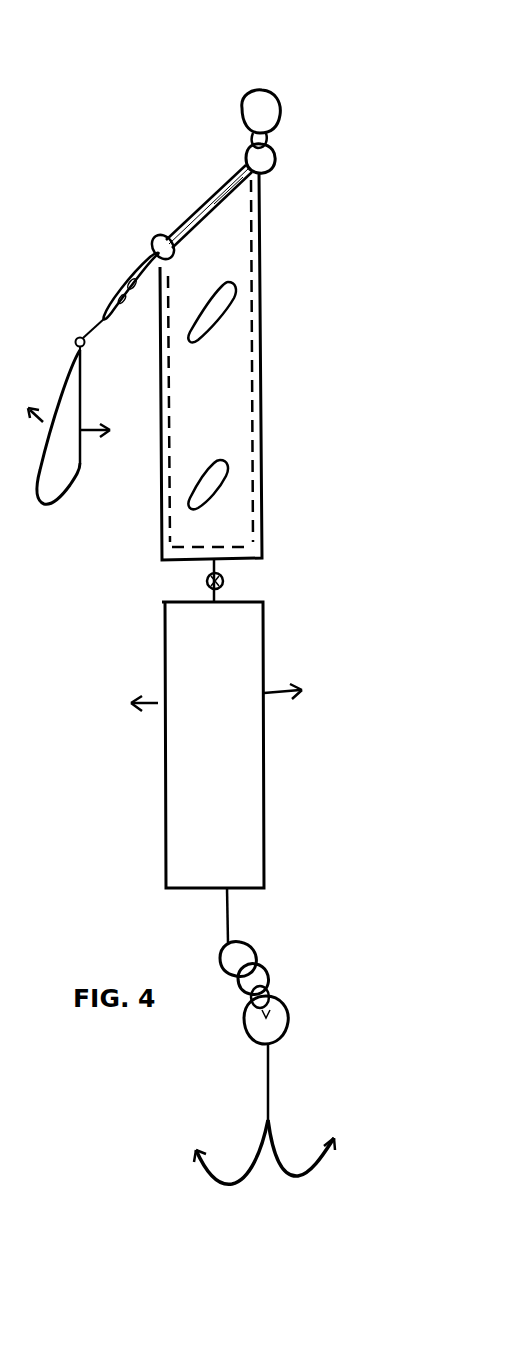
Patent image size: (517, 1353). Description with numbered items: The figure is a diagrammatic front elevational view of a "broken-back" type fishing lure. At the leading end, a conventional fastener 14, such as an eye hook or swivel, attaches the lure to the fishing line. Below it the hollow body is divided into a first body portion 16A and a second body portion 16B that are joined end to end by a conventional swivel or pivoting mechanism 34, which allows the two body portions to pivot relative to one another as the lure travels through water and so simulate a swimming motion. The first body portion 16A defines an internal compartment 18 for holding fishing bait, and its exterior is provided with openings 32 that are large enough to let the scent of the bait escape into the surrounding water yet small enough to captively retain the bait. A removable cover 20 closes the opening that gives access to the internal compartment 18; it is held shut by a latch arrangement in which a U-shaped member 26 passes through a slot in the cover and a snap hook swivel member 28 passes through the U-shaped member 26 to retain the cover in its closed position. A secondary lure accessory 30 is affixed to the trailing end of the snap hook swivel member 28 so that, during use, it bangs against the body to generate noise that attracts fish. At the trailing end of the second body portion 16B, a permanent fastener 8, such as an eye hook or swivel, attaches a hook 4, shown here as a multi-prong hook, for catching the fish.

The fastener 14 is at (243, 103).
The removable cover 20 is at (206, 198).
The U-shaped member 26 is at (158, 231).
The snap hook swivel member 28 is at (118, 277).
The secondary lure accessory 30 is at (80, 463).
The first body portion 16A is at (261, 358).
The internal compartment 18 is at (226, 402).
The openings 32 is at (240, 287).
The swivel or pivoting mechanism 34 is at (178, 577).
The second body portion 16B is at (262, 760).
The permanent fastener 8 is at (258, 946).
The hook 4 is at (272, 1062).